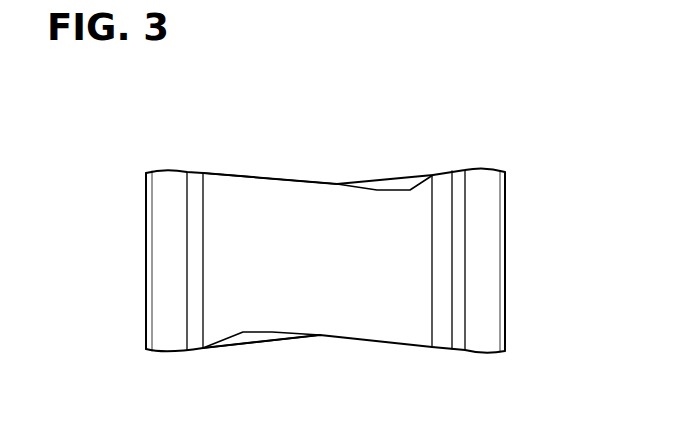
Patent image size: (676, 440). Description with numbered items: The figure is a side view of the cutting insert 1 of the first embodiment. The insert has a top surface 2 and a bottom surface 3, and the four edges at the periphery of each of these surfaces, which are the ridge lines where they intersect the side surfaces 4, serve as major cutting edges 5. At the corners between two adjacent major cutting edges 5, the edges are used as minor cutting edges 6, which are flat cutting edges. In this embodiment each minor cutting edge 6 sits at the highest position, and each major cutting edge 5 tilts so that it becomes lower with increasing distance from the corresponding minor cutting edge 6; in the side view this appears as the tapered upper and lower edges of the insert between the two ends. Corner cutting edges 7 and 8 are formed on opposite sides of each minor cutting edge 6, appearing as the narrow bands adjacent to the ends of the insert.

The cutting insert 1 is at (519, 150).
The top surface 2 is at (220, 172).
The bottom surface 3 is at (200, 350).
The side surfaces 4 is at (480, 295).
The major cutting edges 5 is at (303, 178).
The minor cutting edges 6 is at (165, 168).
The corner cutting edge 7 is at (195, 172).
The corner cutting edge 8 is at (459, 172).